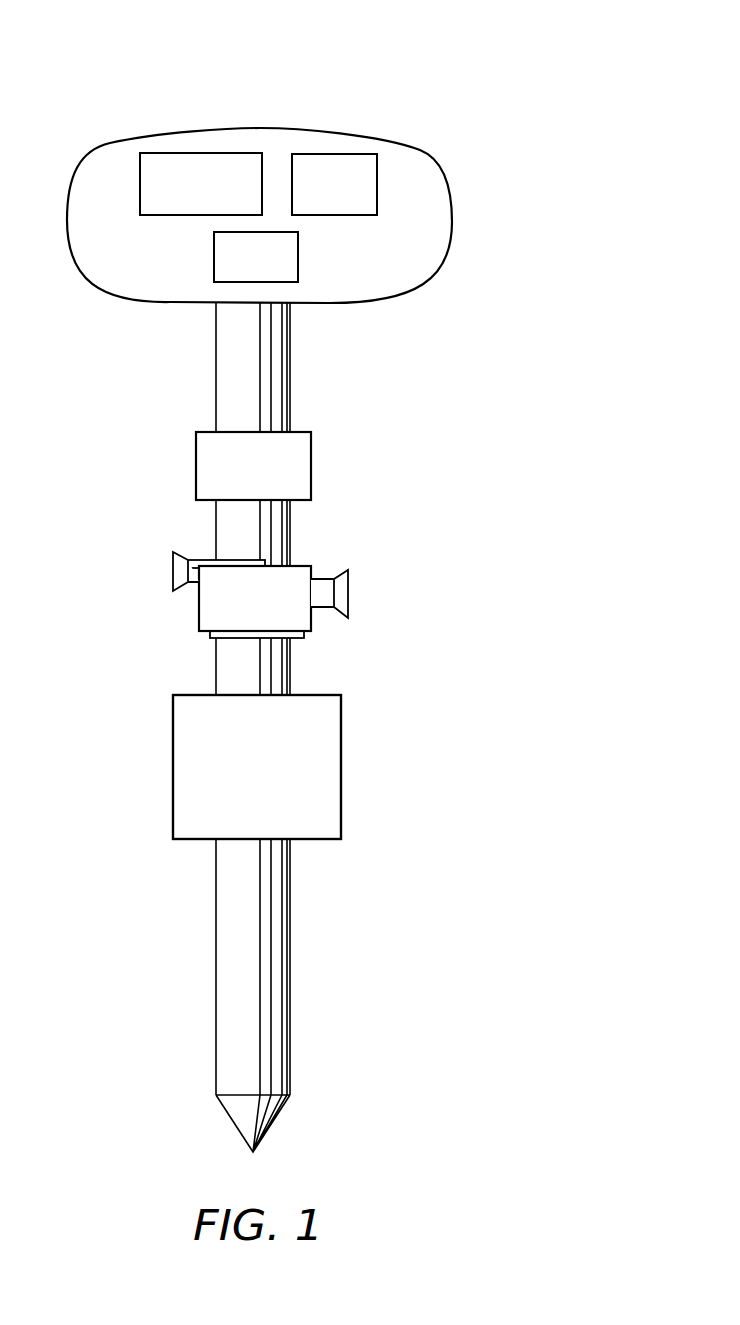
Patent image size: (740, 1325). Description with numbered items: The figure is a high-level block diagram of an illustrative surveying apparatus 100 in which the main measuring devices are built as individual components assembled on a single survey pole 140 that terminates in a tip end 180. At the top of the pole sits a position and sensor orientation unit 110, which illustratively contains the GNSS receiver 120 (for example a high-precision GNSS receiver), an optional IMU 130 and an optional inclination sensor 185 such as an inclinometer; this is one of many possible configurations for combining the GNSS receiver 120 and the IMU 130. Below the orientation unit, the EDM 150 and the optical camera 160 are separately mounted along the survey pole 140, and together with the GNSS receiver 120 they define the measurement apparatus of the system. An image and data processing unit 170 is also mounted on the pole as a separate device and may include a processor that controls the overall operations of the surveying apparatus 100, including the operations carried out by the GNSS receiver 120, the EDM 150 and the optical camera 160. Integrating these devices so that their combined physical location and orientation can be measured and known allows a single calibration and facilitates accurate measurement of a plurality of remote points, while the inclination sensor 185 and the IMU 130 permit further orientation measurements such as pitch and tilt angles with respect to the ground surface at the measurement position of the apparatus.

The surveying apparatus 100 is at (93, 78).
The position and sensor orientation unit 110 is at (452, 221).
The GNSS receiver 120 is at (198, 153).
The IMU 130 is at (335, 153).
The survey pole 140 is at (290, 356).
The EDM 150 is at (311, 470).
The optical camera 160 is at (348, 590).
The image and data processing unit 170 is at (341, 770).
The tip end 180 is at (268, 1122).
The inclination sensor 185 is at (214, 252).